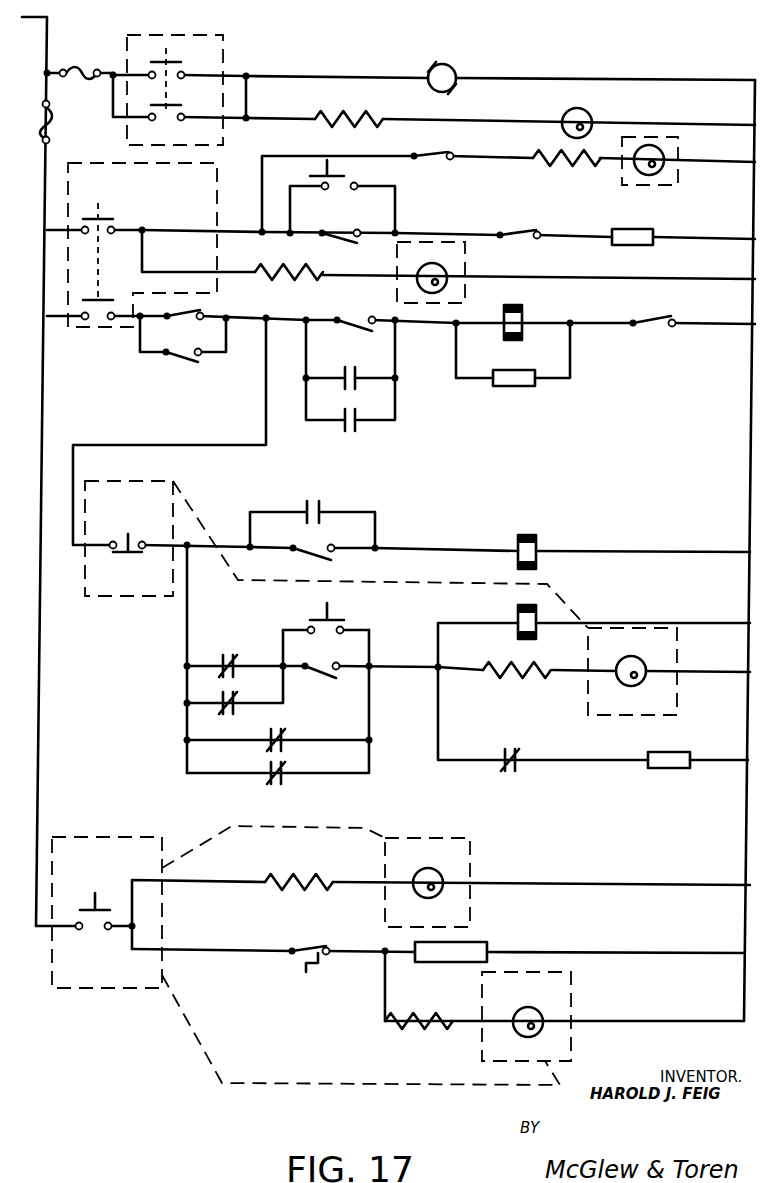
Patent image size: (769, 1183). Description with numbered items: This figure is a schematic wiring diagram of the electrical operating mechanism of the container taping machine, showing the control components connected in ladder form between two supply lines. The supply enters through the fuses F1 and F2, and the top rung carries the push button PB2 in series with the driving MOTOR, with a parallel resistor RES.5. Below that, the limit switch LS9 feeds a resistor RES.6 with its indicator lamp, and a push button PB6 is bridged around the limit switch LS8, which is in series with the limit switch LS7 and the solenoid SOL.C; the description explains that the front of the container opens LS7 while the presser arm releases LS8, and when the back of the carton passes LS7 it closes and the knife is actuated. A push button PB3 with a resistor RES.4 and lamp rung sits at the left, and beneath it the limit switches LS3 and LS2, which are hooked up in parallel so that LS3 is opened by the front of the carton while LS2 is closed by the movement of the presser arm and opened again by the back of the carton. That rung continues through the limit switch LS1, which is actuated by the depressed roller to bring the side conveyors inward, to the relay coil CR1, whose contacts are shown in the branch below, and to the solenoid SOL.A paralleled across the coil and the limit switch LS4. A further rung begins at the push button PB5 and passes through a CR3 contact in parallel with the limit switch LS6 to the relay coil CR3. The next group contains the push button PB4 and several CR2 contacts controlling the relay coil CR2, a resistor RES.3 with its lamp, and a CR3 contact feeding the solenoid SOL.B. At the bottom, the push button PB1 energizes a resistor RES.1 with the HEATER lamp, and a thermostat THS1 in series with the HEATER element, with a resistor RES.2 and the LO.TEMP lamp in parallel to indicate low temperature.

The fuse F1 is at (98, 82).
The fuse F2 is at (32, 122).
The push button switch PB2 is at (183, 82).
The motor MOTOR is at (472, 72).
The resistor RES.5 is at (349, 110).
The limit switch LS9 is at (432, 145).
The resistor with indicator lamps RES.6 is at (598, 145).
The push button switch PB6 is at (342, 196).
The push button switch PB3 is at (113, 257).
The limit switch LS8 is at (340, 225).
The limit switch LS7 is at (519, 223).
The solenoid C SOL.C is at (633, 226).
The resistor with indicator lamp RES.4 is at (351, 281).
The limit switch LS3 is at (184, 306).
The limit switch LS2 is at (183, 339).
The limit switch LS1 is at (355, 313).
The control relay CR1 coil and contacts CR1 is at (417, 356).
The solenoid A SOL.A is at (513, 365).
The limit switch LS4 is at (653, 312).
The push button switch PB5 is at (131, 532).
The control relay CR3 coil and contacts CR3 is at (397, 627).
The limit switch LS6 is at (312, 543).
The push button switch PB4 is at (328, 638).
The control relay CR2 coil and contacts CR2 is at (377, 684).
The resistor with indicator lamp RES.3 is at (563, 676).
The solenoid B SOL.B is at (673, 750).
The push button switch PB1 is at (94, 902).
The resistor RES.1 is at (299, 872).
The heater element and heater indicator lamp HEATER is at (515, 927).
The thermostat switch THS1 is at (315, 949).
The resistor RES.2 is at (419, 1031).
The low temperature indicator lamp LO.TEMP is at (522, 1007).